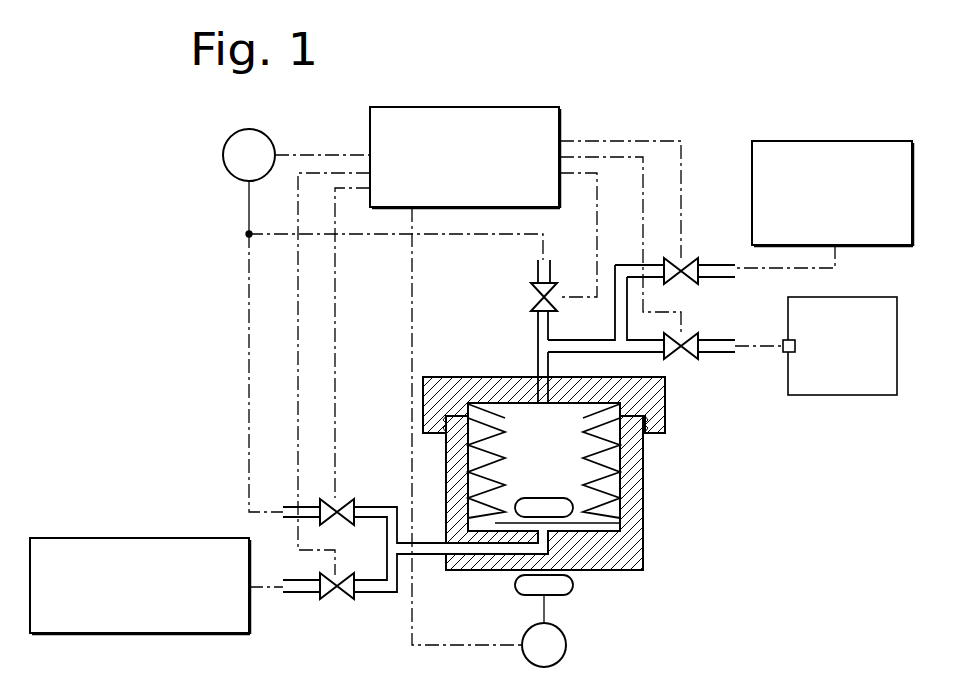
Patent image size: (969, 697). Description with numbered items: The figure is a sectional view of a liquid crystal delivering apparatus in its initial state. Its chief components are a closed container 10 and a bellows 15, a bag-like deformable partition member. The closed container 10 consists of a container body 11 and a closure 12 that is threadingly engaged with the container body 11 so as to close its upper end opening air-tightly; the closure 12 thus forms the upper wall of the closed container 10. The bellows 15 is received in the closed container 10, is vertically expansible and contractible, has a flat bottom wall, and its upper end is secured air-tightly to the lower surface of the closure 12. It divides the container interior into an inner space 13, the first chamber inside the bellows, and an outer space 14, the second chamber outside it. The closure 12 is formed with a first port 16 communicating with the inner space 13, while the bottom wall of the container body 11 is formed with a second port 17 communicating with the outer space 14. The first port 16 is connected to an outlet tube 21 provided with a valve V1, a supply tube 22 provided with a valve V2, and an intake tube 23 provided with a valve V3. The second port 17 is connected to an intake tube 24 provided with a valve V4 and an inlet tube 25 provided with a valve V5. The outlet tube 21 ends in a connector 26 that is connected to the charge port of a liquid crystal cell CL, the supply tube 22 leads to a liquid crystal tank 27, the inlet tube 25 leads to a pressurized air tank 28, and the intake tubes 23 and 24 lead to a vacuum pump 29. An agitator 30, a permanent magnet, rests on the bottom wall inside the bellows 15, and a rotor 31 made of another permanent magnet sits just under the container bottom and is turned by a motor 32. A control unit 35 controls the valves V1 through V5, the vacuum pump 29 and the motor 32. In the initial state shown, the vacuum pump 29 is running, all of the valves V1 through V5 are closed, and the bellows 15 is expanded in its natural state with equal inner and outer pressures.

The closed container 10 is at (596, 468).
The container body 11 is at (648, 480).
The closure 12 is at (665, 420).
The inner space 13 is at (518, 420).
The outer space 14 is at (605, 455).
The bellows 15 is at (575, 512).
The first port 16 is at (538, 378).
The second port 17 is at (580, 530).
The outlet tube 21 is at (717, 341).
The supply tube 22 is at (708, 264).
The intake tube 23 is at (538, 330).
The intake tube 24 is at (288, 506).
The inlet tube 25 is at (297, 594).
The connector 26 is at (783, 352).
The liquid crystal tank 27 is at (833, 141).
The pressurized air tank 28 is at (127, 537).
The vacuum pump 29 is at (224, 163).
The agitator 30 is at (600, 525).
The rotor 31 is at (574, 594).
The motor 32 is at (566, 645).
The control unit 35 is at (370, 140).
The valve V1 is at (684, 340).
The valve V2 is at (683, 258).
The valve V3 is at (531, 290).
The valve V4 is at (330, 498).
The valve V5 is at (345, 600).
The liquid crystal cell CL is at (838, 396).